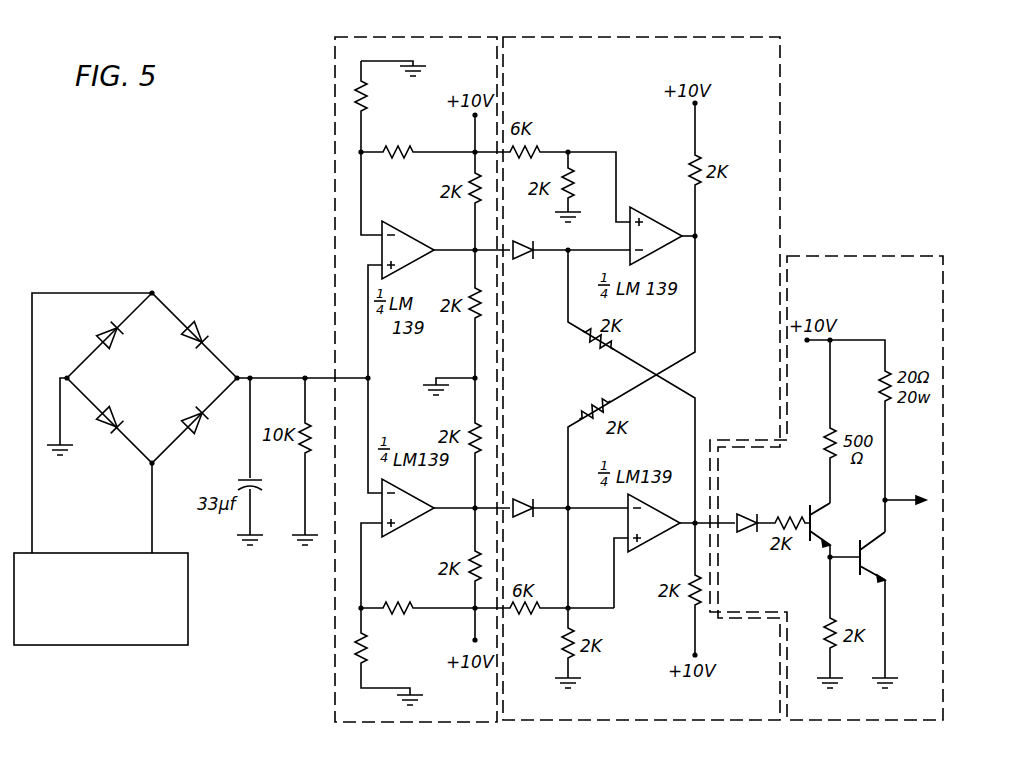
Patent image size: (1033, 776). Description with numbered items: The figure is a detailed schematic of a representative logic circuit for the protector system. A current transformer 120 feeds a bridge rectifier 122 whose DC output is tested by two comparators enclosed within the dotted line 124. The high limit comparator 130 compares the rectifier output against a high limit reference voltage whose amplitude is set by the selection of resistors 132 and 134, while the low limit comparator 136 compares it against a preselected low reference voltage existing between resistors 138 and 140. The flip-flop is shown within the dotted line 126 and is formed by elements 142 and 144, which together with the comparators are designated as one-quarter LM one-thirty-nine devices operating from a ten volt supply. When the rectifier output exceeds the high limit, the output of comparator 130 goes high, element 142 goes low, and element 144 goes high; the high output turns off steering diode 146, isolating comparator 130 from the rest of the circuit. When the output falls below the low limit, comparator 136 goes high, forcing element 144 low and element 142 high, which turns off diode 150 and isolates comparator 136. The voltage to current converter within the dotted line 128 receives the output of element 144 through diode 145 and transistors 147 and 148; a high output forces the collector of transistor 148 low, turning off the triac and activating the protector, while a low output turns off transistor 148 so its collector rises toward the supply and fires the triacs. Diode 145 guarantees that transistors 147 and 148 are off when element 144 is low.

The current transformer 120 is at (102, 647).
The bridge rectifier 122 is at (186, 300).
The dotted line 124 is at (334, 70).
The dotted line 126 is at (783, 84).
The dotted line 128 is at (872, 256).
The high limit comparator 130 is at (405, 218).
The resistor 132 is at (368, 102).
The resistor 134 is at (394, 158).
The low limit comparator 136 is at (410, 530).
The resistor 138 is at (368, 655).
The resistor 140 is at (404, 613).
The element 142 is at (650, 218).
The element 144 is at (652, 540).
The diode 145 is at (742, 510).
The steering diode 146 is at (524, 262).
The transistor 147 is at (818, 510).
The transistor 148 is at (881, 553).
The diode 150 is at (524, 520).